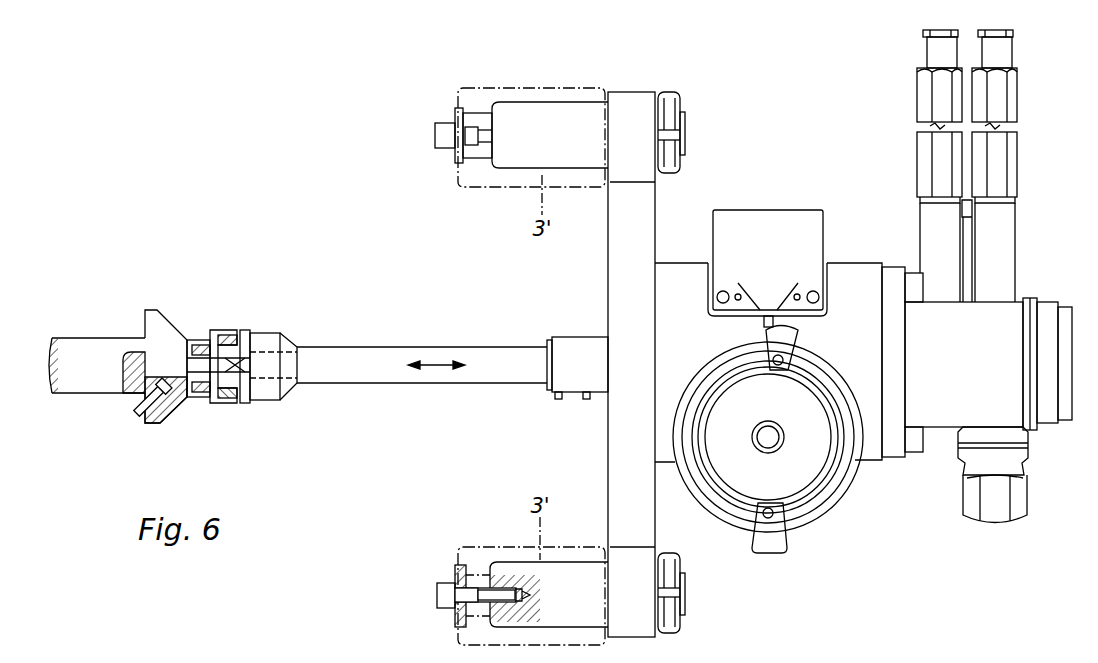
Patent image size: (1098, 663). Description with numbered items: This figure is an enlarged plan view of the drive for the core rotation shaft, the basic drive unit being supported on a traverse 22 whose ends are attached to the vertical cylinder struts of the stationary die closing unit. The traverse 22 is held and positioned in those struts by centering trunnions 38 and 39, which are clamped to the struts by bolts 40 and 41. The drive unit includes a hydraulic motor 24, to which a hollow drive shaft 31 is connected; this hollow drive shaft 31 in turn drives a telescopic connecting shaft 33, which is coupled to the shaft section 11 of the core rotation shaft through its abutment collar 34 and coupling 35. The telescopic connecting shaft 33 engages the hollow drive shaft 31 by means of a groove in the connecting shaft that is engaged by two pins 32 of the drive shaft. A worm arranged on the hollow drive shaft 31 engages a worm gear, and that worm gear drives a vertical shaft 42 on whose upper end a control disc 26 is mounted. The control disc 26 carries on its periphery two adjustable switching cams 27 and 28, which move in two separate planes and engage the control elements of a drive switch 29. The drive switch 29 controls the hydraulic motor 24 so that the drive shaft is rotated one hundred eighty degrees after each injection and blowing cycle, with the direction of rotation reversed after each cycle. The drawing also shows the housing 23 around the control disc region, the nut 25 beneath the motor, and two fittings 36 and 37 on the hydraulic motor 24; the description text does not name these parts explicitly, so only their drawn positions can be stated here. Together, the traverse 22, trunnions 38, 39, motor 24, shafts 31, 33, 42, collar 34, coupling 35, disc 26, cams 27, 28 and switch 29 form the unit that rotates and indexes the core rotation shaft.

The shaft section of the core rotation shaft 11 is at (93, 355).
The traverse 22 is at (630, 257).
The housing 23 is at (852, 282).
The hydraulic motor 24 is at (1005, 330).
The nut 25 is at (1000, 492).
The control disc 26 is at (803, 510).
The switching cam 27 is at (768, 537).
The switching cam 28 is at (780, 335).
The drive switch 29 is at (762, 230).
The hollow drive shaft 31 is at (578, 352).
The pins 32 is at (588, 400).
The telescopic connecting shaft 33 is at (333, 363).
The abutment collar 34 is at (163, 337).
The coupling 35 is at (262, 347).
The tube fitting 36 is at (940, 247).
The tube fitting 37 is at (1020, 252).
The centering trunnion 38 is at (542, 125).
The centering trunnion 39 is at (577, 590).
The bolt 40 is at (445, 595).
The bolt 41 is at (443, 137).
The vertical shaft 42 is at (775, 437).